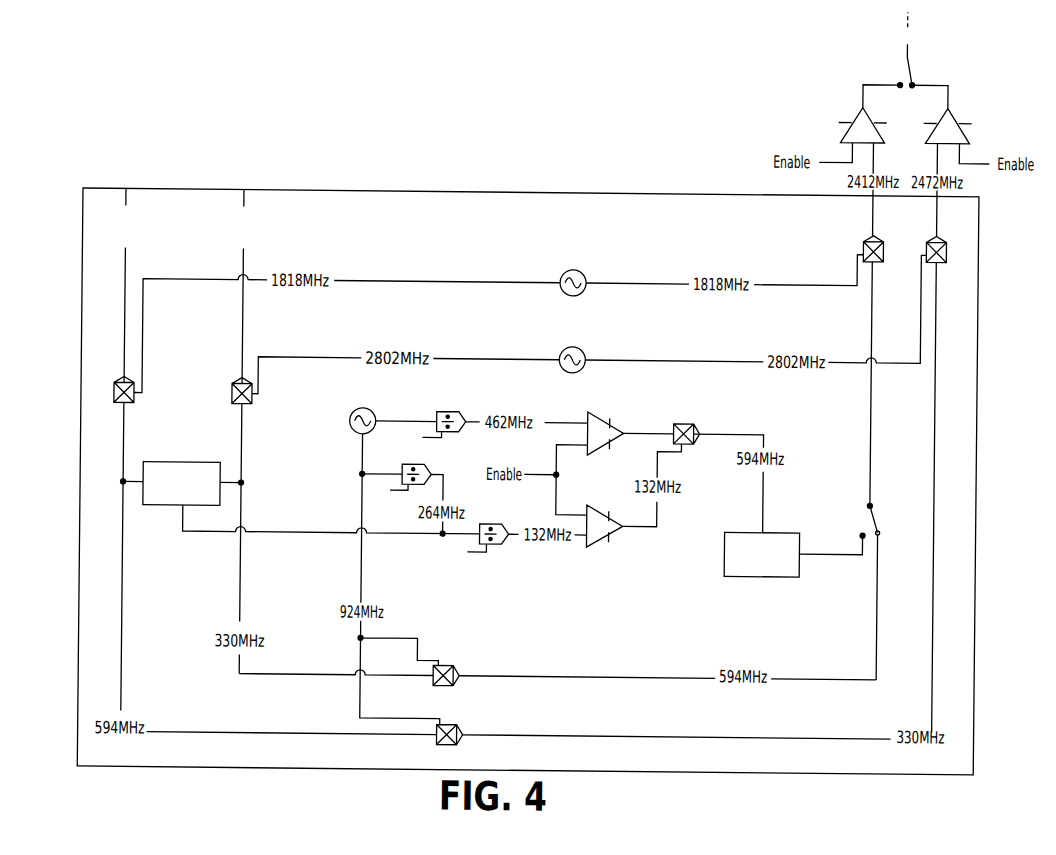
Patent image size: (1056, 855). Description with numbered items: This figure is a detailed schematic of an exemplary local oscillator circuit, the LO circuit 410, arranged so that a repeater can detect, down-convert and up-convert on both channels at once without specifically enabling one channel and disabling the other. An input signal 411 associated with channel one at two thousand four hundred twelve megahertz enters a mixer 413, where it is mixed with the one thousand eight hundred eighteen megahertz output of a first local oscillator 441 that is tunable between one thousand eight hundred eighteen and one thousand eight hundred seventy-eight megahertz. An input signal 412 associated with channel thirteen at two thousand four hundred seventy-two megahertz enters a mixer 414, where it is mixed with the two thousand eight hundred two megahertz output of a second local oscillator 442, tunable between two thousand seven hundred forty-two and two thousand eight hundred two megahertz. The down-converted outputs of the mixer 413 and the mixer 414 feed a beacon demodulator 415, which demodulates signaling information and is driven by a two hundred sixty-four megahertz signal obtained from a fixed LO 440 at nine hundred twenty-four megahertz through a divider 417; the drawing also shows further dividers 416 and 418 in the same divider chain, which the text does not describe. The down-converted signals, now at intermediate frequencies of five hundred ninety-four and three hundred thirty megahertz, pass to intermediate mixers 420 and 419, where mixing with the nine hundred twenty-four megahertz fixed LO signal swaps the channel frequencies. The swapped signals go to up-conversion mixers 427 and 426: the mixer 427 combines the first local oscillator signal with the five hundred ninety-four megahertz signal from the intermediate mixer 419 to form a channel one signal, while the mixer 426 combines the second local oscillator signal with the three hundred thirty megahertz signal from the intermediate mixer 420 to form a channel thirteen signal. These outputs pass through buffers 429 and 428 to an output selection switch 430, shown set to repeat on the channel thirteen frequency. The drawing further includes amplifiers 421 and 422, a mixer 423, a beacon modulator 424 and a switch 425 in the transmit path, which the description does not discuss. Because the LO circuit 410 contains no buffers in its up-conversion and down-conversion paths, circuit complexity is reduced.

The LO circuit 410 is at (980, 418).
The input signal 411 is at (125, 202).
The input signal 412 is at (244, 200).
The mixer 413 is at (116, 396).
The mixer 414 is at (232, 394).
The beacon demodulator 415 is at (146, 494).
The divide-by-2 frequency divider 416 is at (439, 424).
The divider 417 is at (405, 478).
The divide-by-2 frequency divider 418 is at (478, 538).
The intermediate mixer 419 is at (437, 680).
The intermediate mixer 420 is at (444, 736).
The amplifier 421 is at (598, 543).
The amplifier 422 is at (605, 449).
The mixer 423 is at (689, 440).
The beacon modulator 424 is at (780, 571).
The switch 425 is at (880, 514).
The up-conversion mixer 426 is at (949, 243).
The up-conversion mixer 427 is at (885, 253).
The buffer 428 is at (966, 126).
The buffer 429 is at (848, 126).
The output selection switch 430 is at (911, 64).
The fixed LO 440 is at (339, 408).
The LO 1 441 is at (549, 272).
The LO 2 442 is at (555, 348).